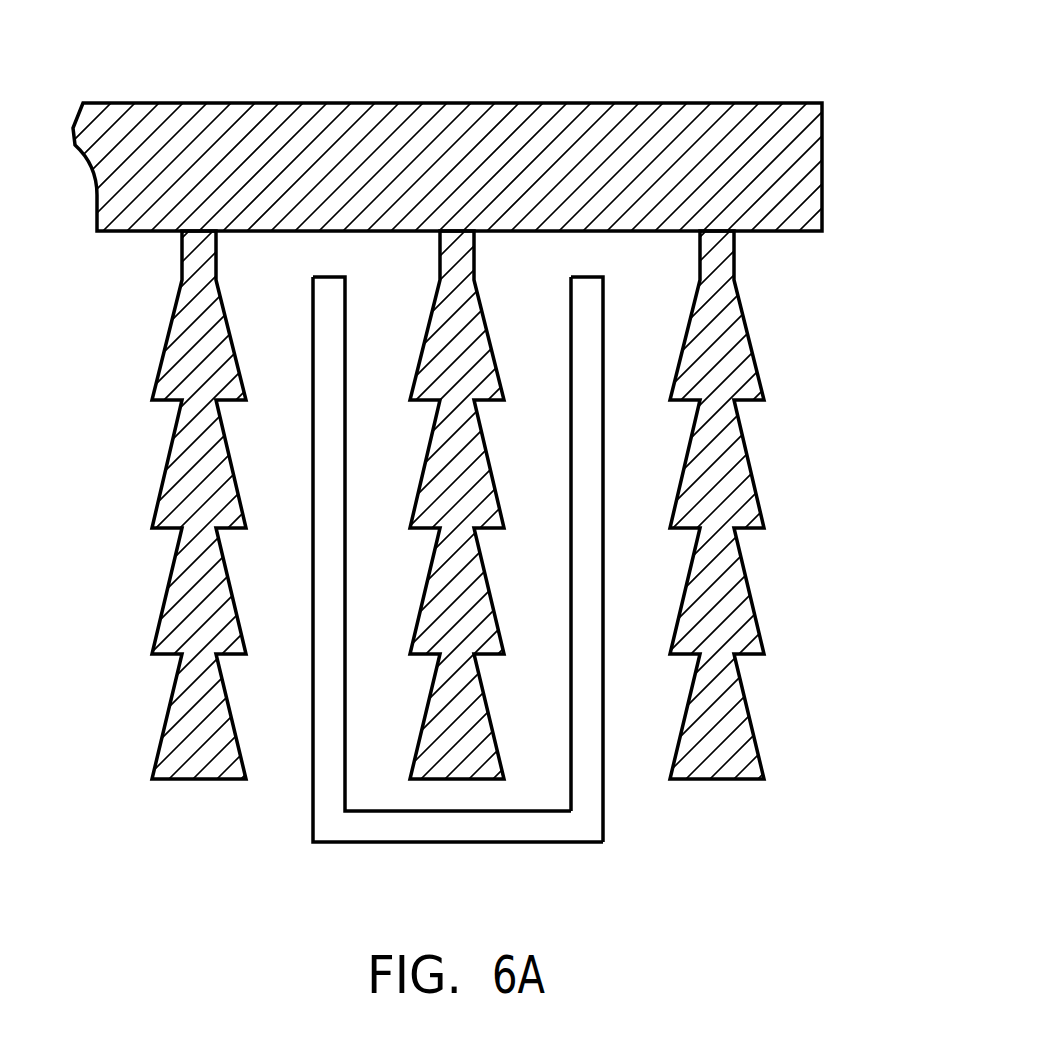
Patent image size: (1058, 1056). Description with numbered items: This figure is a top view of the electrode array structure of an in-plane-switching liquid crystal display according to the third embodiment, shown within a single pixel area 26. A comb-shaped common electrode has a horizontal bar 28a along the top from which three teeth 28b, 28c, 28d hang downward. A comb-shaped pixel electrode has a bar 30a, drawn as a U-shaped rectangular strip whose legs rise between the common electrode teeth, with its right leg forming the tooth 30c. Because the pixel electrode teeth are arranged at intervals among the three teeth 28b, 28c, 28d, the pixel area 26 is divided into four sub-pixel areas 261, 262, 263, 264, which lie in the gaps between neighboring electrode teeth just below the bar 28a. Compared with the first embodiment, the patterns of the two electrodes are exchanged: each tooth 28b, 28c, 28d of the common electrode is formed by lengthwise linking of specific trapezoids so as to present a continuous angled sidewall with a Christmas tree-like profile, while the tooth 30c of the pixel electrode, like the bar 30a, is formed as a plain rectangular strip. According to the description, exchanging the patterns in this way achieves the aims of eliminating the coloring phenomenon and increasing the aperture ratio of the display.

The pixel area 26 is at (529, 472).
The bar 28a is at (777, 103).
The tooth 28b is at (222, 484).
The tooth 28c is at (480, 478).
The tooth 28d is at (735, 484).
The sub-pixel area 261 is at (268, 252).
The sub-pixel area 262 is at (412, 252).
The sub-pixel area 263 is at (510, 252).
The sub-pixel area 264 is at (662, 253).
The bar 30a is at (337, 623).
The tooth 30c is at (595, 623).